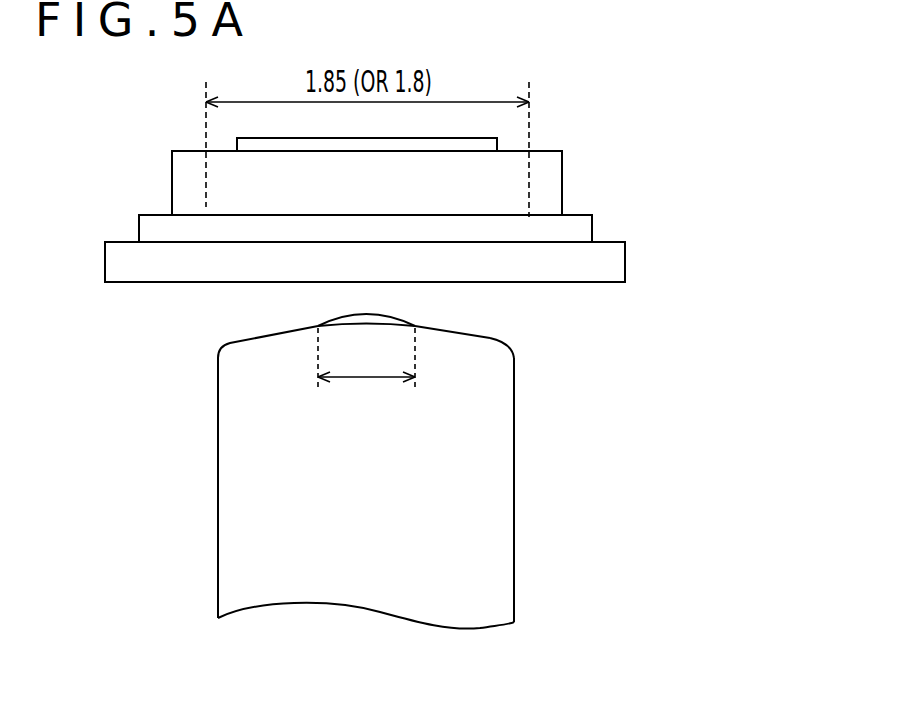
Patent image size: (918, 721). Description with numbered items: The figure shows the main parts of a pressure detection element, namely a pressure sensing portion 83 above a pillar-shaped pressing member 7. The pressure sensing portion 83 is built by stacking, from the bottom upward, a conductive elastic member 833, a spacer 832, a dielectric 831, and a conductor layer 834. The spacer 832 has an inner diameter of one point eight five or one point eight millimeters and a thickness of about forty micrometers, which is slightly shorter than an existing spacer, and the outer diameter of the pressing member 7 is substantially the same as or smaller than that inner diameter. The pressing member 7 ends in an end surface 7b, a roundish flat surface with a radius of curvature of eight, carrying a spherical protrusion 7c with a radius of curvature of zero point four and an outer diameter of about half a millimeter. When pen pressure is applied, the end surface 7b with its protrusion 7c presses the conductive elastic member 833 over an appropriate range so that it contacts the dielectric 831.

The pressure sensing portion 83 is at (448, 194).
The dielectric 831 is at (547, 183).
The spacer 832 is at (582, 223).
The conductive elastic member 833 is at (617, 260).
The conductor layer 834 is at (490, 147).
The pressing member 7 is at (514, 492).
The end surface 7b is at (490, 338).
The protrusion 7c is at (332, 316).